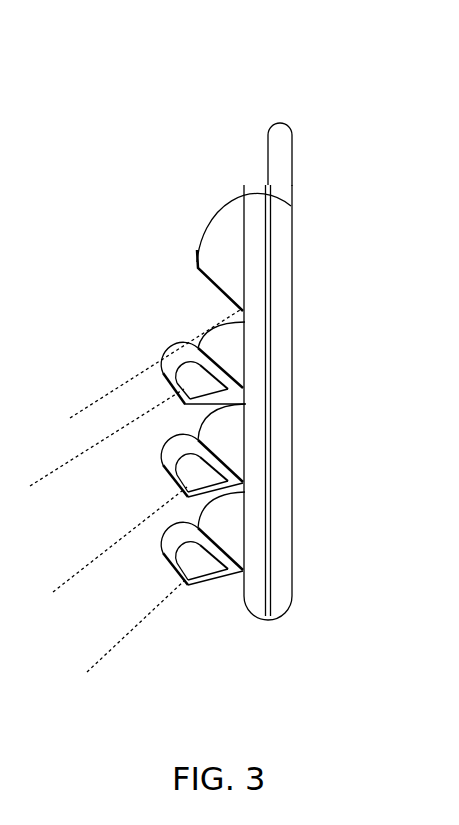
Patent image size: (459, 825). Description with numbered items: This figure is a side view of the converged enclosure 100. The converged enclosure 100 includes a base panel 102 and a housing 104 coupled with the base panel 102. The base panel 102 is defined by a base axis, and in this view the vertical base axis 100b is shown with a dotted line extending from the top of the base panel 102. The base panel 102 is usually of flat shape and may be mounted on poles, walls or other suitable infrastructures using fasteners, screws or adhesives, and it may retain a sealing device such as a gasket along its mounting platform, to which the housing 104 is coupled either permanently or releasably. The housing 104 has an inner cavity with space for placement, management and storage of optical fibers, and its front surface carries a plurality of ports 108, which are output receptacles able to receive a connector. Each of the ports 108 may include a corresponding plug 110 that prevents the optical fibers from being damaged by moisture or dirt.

The converged enclosure 100 is at (172, 318).
The vertical base axis 100b is at (280, 122).
The base panel 102 is at (293, 278).
The housing 104 is at (245, 321).
The plurality of ports 108 is at (246, 380).
The plurality of plugs 110 is at (246, 404).